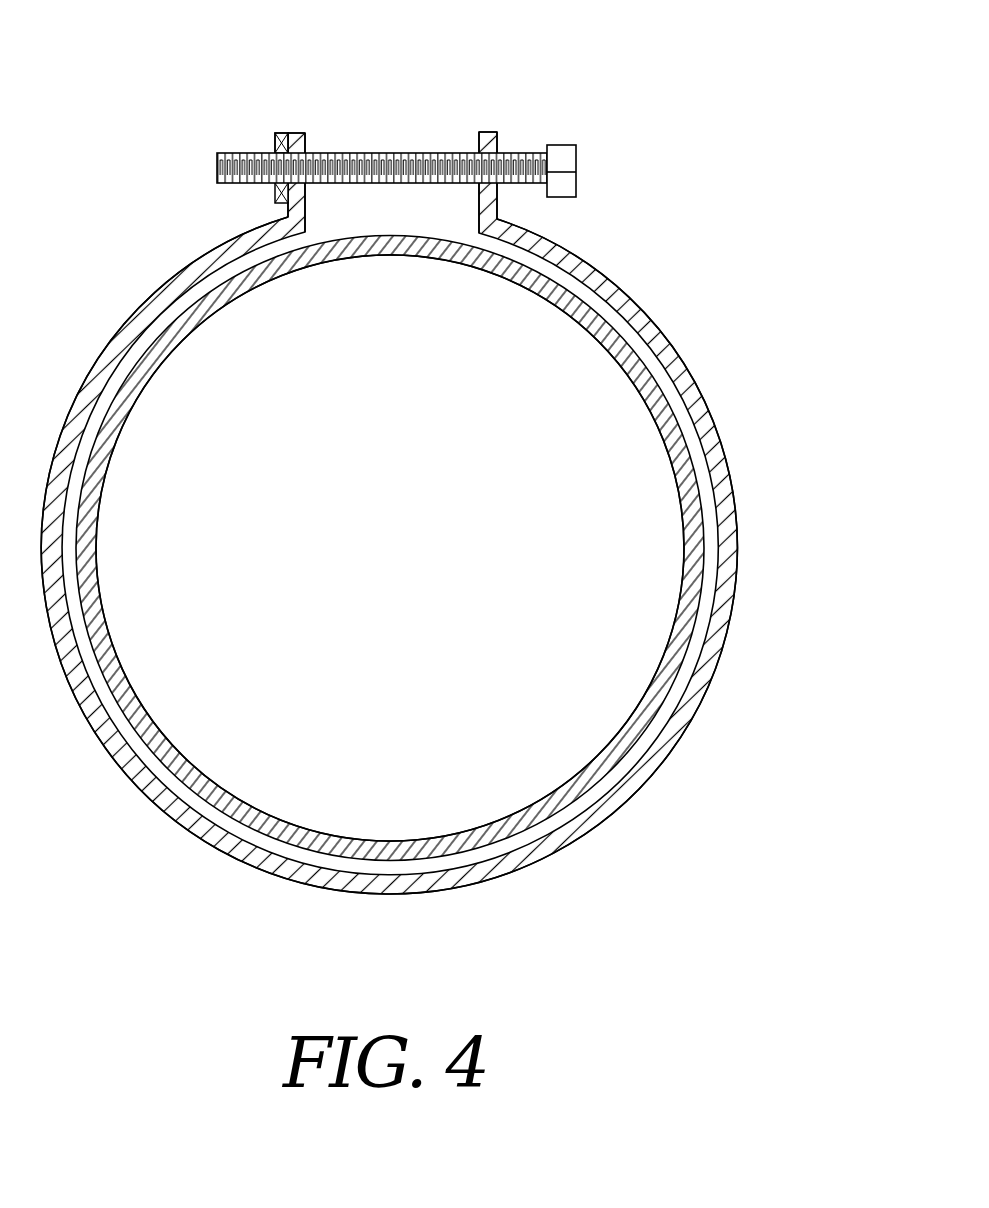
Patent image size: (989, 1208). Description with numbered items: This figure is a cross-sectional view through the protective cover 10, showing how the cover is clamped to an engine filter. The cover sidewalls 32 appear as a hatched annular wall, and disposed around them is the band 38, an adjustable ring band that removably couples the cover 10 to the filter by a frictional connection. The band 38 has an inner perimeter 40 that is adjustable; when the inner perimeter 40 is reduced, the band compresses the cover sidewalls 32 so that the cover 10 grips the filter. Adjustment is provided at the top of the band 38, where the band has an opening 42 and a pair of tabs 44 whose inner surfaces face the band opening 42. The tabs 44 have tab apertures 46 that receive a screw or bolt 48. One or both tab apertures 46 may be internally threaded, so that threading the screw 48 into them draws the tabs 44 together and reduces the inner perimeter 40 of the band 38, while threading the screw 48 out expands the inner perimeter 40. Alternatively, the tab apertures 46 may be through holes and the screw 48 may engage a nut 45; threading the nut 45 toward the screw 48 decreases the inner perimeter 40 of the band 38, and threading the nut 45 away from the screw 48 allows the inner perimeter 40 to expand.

The protective cover 10 is at (688, 642).
The cover sidewalls 32 is at (703, 540).
The band 38 is at (655, 318).
The inner perimeter of the band 40 is at (692, 379).
The band opening 42 is at (417, 227).
The tabs 44 is at (295, 132).
The nut 45 is at (278, 143).
The tab apertures 46 is at (285, 133).
The screw or bolt 48 is at (578, 156).